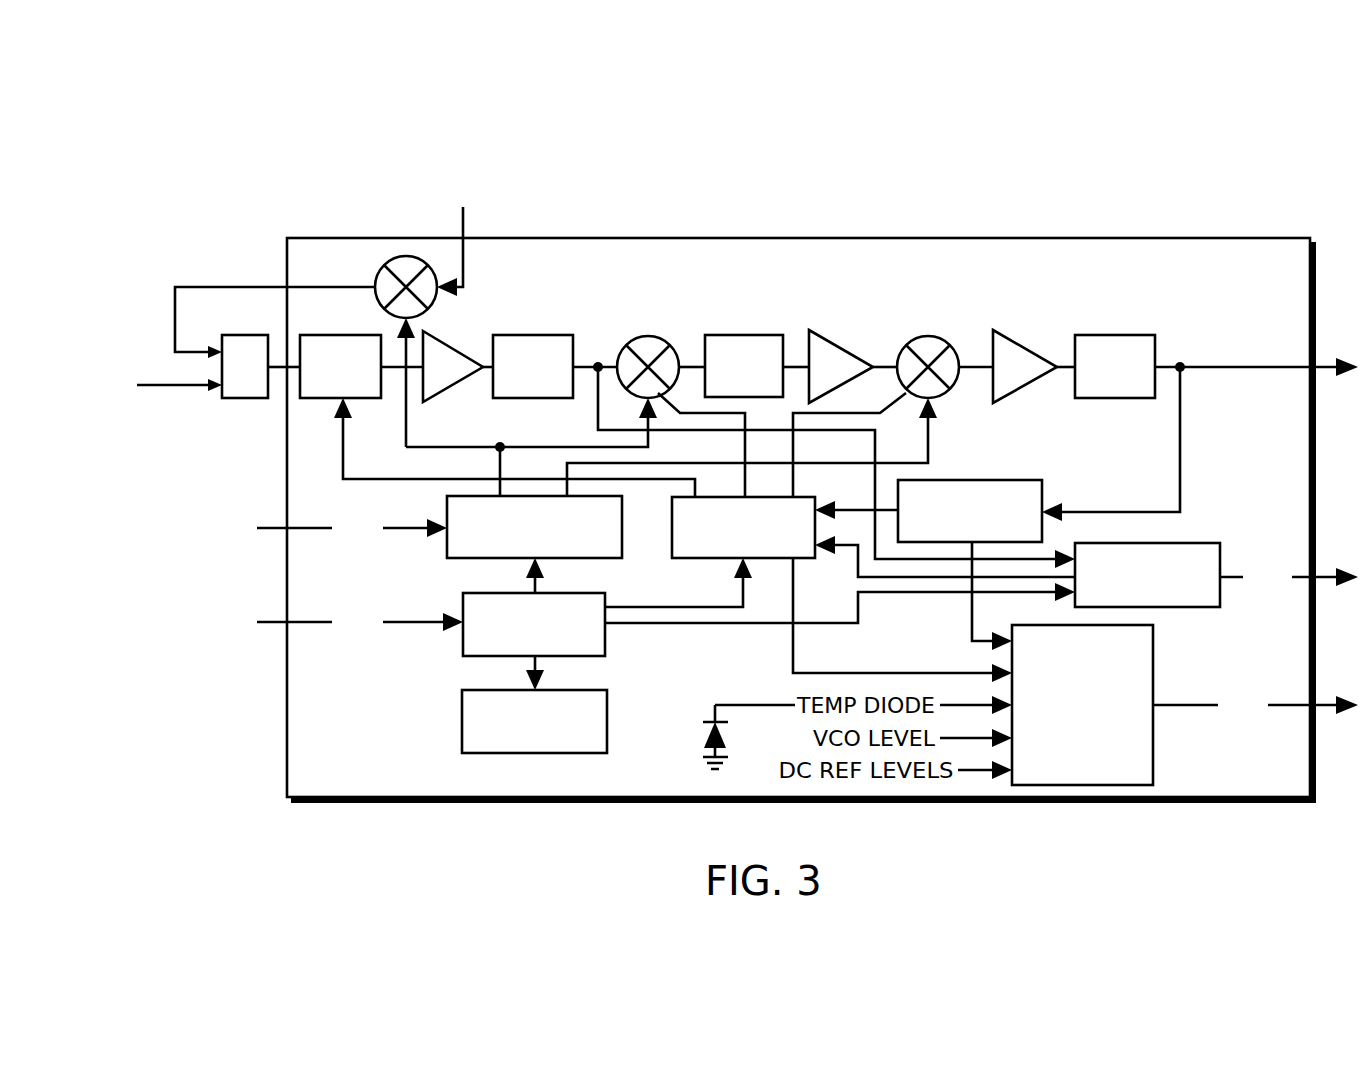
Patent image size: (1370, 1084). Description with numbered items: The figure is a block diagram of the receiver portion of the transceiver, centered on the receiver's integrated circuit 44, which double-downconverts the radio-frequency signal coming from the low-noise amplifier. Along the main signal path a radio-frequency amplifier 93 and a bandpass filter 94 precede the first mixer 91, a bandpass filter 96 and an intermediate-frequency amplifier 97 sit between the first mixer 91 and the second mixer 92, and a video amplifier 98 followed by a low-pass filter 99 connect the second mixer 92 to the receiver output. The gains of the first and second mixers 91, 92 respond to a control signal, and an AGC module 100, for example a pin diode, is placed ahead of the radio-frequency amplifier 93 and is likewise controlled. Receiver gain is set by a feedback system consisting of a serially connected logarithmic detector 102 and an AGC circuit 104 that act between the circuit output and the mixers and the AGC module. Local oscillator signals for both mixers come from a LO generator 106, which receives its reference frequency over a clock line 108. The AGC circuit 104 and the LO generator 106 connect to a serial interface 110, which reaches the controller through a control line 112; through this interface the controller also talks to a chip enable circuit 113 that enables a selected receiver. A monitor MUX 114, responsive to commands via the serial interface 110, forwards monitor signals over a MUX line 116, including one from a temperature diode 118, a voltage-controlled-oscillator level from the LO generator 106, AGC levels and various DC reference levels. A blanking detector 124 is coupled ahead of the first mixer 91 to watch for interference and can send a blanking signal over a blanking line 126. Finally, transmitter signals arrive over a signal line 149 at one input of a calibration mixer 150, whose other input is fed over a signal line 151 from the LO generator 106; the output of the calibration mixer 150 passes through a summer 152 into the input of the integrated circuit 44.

The integrated circuit 44 is at (512, 203).
The calibration mixer 150 is at (393, 258).
The signal line 149 is at (463, 207).
The signal line 151 is at (408, 382).
The summer 152 is at (242, 398).
The AGC circuit 104 is at (320, 398).
The radio-frequency amplifier 93 is at (445, 332).
The bandpass filter 94 is at (523, 335).
The first mixer 91 is at (633, 330).
The bandpass filter 96 is at (737, 335).
The intermediate-frequency amplifier 97 is at (840, 340).
The second mixer 92 is at (920, 335).
The video amplifier 98 is at (1020, 340).
The low-pass filter 99 is at (1110, 335).
The logarithmic detector 102 is at (1012, 480).
The blanking detector 124 is at (1202, 543).
The blanking line 126 is at (1289, 577).
The monitor MUX 114 is at (1153, 638).
The MUX line 116 is at (1255, 705).
The clock line 108 is at (352, 528).
The LO generator 106 is at (447, 545).
The control line 112 is at (360, 622).
The serial interface 110 is at (463, 640).
The chip enable circuit 113 is at (462, 712).
The AGC module 100 is at (672, 535).
The temperature diode 118 is at (703, 735).